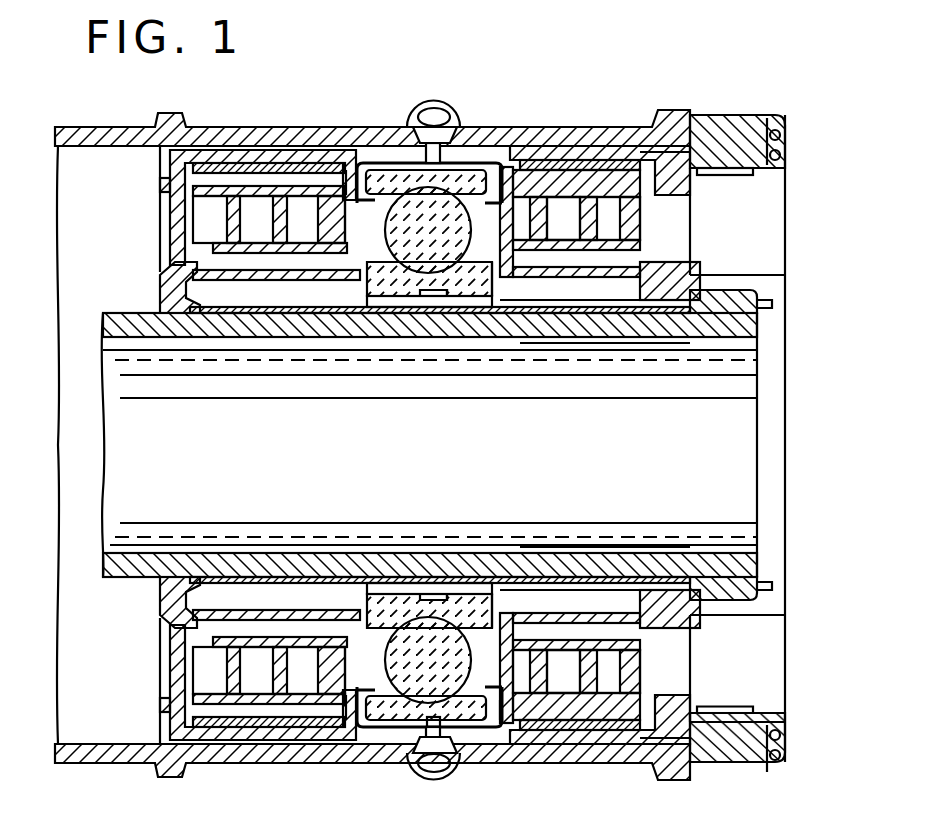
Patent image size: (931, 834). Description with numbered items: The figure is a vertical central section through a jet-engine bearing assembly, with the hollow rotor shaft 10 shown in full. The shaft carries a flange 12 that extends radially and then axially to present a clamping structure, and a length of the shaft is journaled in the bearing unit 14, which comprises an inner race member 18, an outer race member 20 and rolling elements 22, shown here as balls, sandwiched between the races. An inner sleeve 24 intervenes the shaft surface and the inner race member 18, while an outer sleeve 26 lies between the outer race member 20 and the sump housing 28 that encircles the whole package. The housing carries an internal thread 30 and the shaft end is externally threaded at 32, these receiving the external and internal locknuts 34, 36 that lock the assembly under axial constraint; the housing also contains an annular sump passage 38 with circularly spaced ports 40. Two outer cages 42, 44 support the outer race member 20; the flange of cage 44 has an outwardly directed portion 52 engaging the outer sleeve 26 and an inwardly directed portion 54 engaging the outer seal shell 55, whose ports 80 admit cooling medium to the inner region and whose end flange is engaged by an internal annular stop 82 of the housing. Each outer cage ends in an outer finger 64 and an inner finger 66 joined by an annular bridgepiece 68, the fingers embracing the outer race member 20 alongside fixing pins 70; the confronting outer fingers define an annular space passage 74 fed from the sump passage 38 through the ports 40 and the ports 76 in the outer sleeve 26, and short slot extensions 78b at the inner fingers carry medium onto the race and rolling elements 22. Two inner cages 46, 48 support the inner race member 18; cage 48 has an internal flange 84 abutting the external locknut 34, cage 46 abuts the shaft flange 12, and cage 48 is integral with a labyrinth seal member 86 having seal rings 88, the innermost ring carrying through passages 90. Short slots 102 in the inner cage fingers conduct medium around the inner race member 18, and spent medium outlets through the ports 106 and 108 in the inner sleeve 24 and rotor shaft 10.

The rotor shaft 10 is at (645, 469).
The flange 12 is at (167, 283).
The bearing unit 14 is at (362, 214).
The inner race member 18 is at (357, 300).
The outer race member 20 is at (380, 165).
The rolling elements 22 is at (362, 198).
The inner sleeve 24 is at (173, 335).
The outer sleeve 26 is at (240, 155).
The sump housing 28 is at (398, 150).
The internal thread 30 is at (758, 117).
The external thread 32 is at (786, 341).
The external locknut 34 is at (780, 293).
The internal locknut 36 is at (787, 172).
The sump passage 38 is at (423, 112).
The ports 40 is at (447, 112).
The outer cage 42 is at (262, 162).
The outer cage 44 is at (652, 128).
The inner cage 46 is at (272, 290).
The inner cage 48 is at (643, 265).
The outwardly directed portion 52 is at (712, 142).
The inwardly directed portion 54 is at (690, 185).
The outer seal shell 55 is at (618, 147).
The outer finger 64 is at (478, 700).
The inner finger 66 is at (507, 700).
The annular bridgepieces 68 is at (548, 150).
The fixing pins 70 is at (515, 342).
The annular space passage 74 is at (465, 135).
The ports 76 is at (458, 128).
The short slot extensions 78b is at (520, 348).
The ports 80 is at (590, 160).
The internal annular stop 82 is at (162, 181).
The internal flange 84 is at (786, 275).
The labyrinth seal member 86 is at (652, 217).
The seal rings 88 is at (608, 205).
The through passages 90 is at (530, 250).
The short slots 102 is at (481, 300).
The ports 106 is at (440, 298).
The ports 108 is at (434, 300).